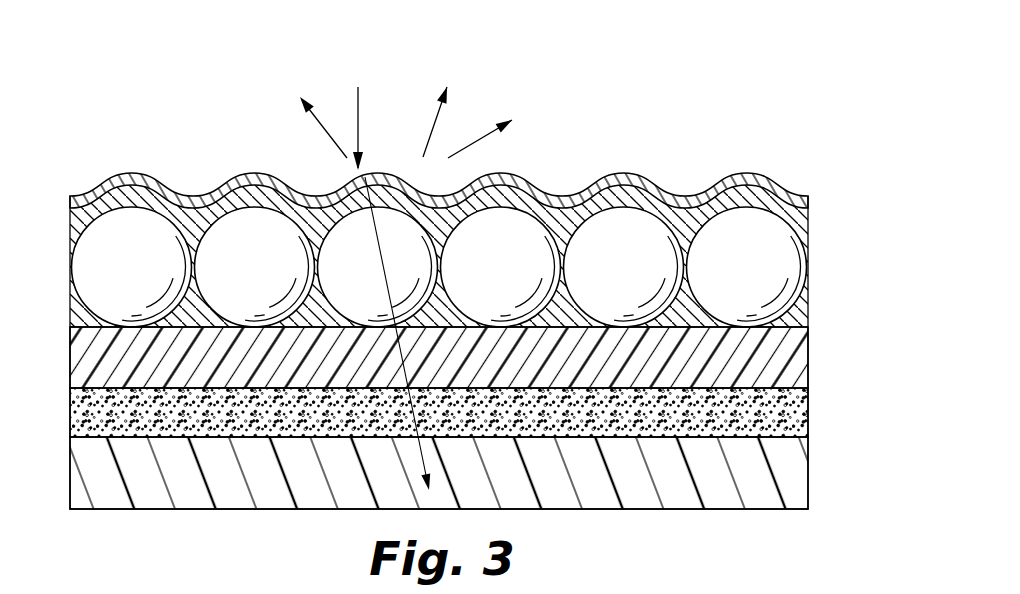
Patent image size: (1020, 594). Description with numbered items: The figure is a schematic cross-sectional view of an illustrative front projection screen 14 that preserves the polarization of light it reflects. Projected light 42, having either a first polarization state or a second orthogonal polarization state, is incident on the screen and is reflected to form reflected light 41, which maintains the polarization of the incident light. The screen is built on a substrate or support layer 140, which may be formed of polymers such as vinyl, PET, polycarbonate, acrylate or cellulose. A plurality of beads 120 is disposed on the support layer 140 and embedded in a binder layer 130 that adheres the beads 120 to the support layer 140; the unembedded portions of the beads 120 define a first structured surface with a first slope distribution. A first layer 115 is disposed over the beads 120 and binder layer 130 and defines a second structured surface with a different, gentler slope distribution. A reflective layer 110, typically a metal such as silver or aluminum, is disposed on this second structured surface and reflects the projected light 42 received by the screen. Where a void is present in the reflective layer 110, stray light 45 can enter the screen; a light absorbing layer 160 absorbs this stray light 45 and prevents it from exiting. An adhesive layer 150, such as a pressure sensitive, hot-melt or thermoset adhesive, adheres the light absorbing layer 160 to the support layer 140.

The projection screen 14 is at (784, 114).
The reflected light 41 is at (472, 130).
The projected light 42 is at (358, 108).
The stray light 45 is at (335, 197).
The reflective layer 110 is at (768, 187).
The first layer 115 is at (810, 213).
The beads 120 is at (703, 233).
The binder layer 130 is at (800, 312).
The support layer 140 is at (800, 370).
The adhesive layer 150 is at (800, 413).
The light absorbing layer 160 is at (800, 472).